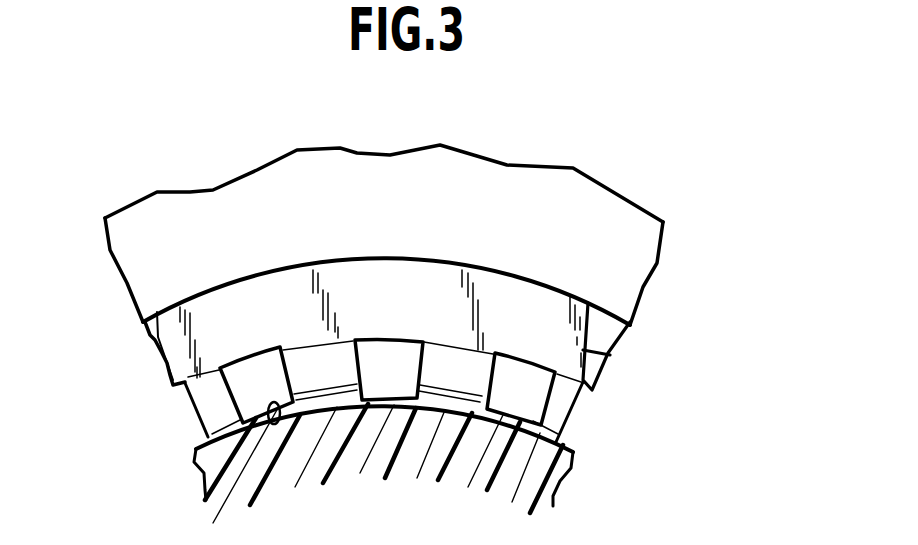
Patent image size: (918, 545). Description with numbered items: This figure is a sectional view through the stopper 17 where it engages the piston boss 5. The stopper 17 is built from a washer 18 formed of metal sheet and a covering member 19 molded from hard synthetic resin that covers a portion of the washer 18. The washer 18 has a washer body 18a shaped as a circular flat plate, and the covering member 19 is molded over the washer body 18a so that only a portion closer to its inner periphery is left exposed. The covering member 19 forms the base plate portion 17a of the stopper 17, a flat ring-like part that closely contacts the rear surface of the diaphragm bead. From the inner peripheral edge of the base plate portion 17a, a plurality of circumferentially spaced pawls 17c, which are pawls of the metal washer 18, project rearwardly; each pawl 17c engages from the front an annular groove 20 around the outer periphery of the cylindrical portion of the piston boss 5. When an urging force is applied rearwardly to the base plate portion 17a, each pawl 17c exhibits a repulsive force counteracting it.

The piston boss 5 is at (385, 474).
The stopper 17 is at (419, 267).
The base plate portion 17a is at (157, 340).
The pawls 17c is at (436, 372).
The washer 18 is at (612, 353).
The washer body 18a is at (410, 277).
The covering member 19 is at (634, 283).
The annular groove 20 is at (277, 424).